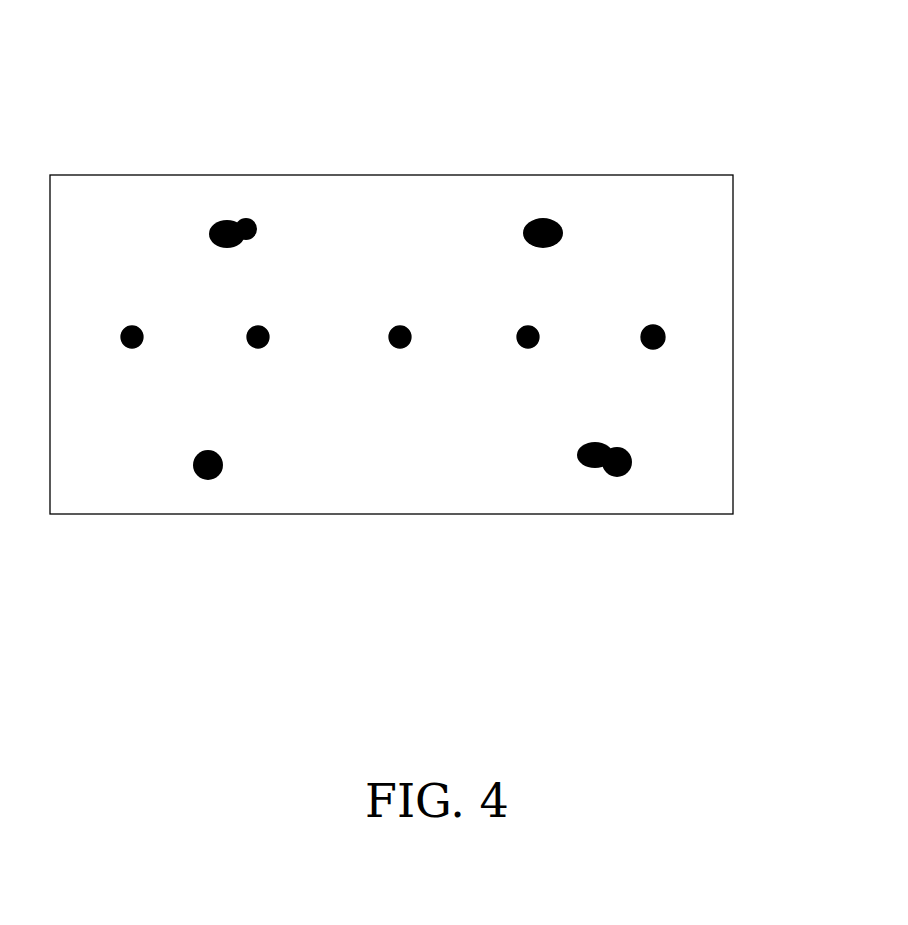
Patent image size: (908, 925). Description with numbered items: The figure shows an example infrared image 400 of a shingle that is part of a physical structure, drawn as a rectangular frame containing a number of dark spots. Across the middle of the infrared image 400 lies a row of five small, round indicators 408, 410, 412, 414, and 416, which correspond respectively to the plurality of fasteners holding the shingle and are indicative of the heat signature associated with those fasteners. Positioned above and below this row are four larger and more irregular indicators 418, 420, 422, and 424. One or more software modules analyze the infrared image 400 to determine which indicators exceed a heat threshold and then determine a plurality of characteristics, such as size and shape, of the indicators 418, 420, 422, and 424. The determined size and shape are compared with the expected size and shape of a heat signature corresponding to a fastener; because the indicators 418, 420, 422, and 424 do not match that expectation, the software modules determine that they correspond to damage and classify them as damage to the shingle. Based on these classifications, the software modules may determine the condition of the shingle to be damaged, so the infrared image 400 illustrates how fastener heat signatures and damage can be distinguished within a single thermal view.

The infrared image 400 is at (812, 82).
The indicator 408 is at (133, 326).
The indicator 410 is at (259, 326).
The indicator 412 is at (402, 326).
The indicator 414 is at (529, 326).
The indicator 416 is at (654, 325).
The indicator 418 is at (252, 218).
The indicator 420 is at (558, 223).
The indicator 422 is at (217, 453).
The indicator 424 is at (620, 445).